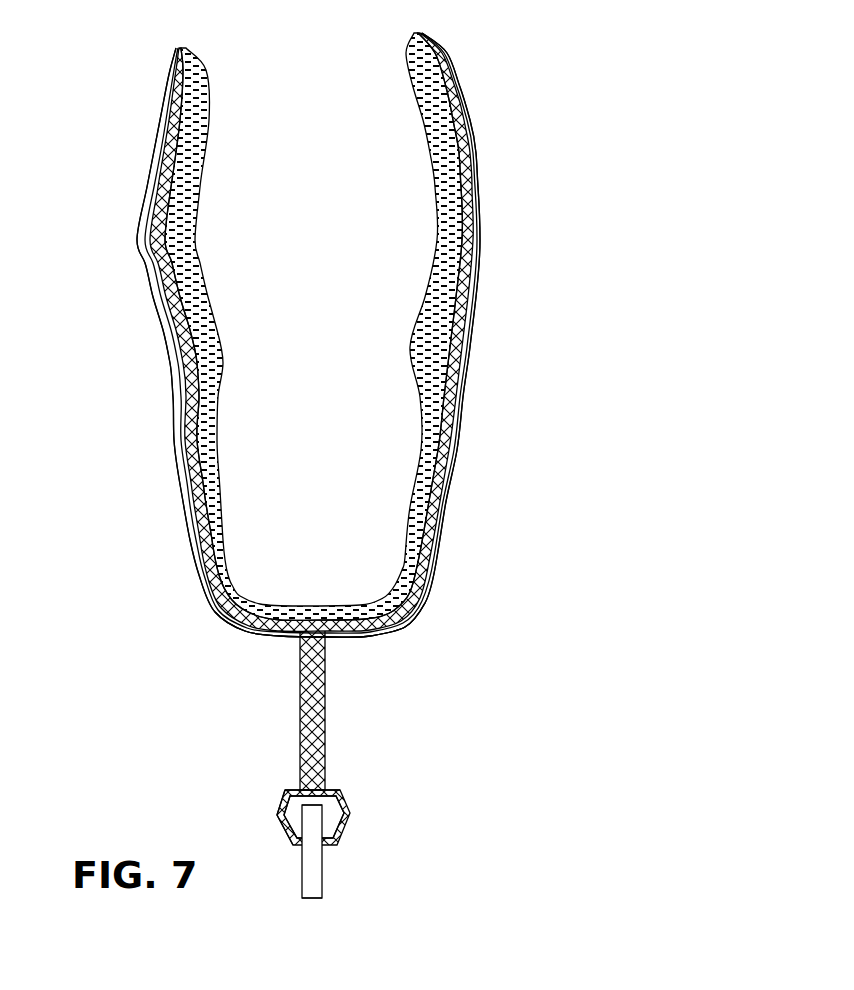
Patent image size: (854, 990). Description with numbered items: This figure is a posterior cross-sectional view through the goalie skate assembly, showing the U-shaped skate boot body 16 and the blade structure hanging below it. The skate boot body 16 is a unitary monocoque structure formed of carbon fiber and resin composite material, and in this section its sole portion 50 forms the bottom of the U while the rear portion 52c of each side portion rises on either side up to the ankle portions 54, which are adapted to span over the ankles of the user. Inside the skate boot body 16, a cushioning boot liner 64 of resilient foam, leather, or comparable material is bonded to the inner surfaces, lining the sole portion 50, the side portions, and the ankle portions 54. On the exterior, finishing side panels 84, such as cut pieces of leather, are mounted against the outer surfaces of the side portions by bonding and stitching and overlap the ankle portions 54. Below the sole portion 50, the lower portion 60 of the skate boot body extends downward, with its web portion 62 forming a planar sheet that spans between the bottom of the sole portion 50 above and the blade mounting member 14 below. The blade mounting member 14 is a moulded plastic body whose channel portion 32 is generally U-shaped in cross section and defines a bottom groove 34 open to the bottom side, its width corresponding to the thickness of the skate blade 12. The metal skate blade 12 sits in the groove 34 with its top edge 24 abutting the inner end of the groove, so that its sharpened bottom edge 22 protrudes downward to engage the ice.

The skate blade 12 is at (322, 877).
The blade mounting member 14 is at (333, 812).
The skate boot body 16 is at (445, 508).
The bottom edge 22 is at (312, 899).
The top edge 24 is at (318, 804).
The channel portion 32 is at (286, 791).
The bottom groove 34 is at (283, 815).
The sole portion 50 is at (353, 638).
The rear portion 52c is at (200, 548).
The ankle portions 54 is at (149, 253).
The lower portion 60 is at (351, 818).
The web portion 62 is at (326, 705).
The cushioning boot liner 64 is at (213, 331).
The finishing side panels 84 is at (159, 303).